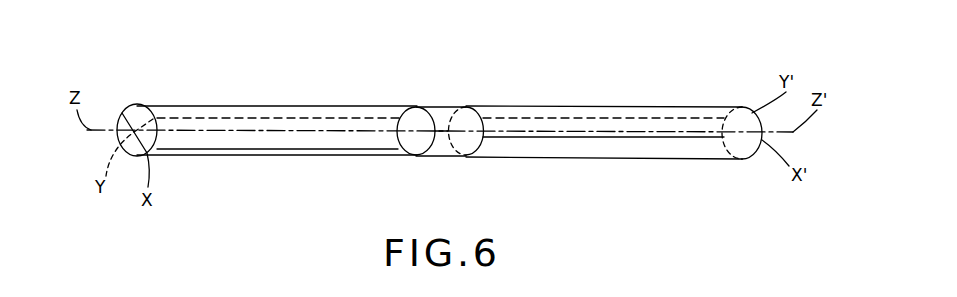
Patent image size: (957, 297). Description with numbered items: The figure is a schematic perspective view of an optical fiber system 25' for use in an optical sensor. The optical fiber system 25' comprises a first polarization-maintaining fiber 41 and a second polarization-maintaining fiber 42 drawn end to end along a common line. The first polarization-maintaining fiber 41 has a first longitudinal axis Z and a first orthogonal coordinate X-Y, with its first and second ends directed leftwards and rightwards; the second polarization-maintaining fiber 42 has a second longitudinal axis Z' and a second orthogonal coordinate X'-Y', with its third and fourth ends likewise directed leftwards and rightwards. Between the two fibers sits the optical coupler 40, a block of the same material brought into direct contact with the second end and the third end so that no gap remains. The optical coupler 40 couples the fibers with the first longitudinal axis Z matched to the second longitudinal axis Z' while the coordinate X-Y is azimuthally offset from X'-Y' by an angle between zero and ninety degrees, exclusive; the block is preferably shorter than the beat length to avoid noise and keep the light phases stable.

The optical fiber system 25' is at (439, 91).
The optical coupler 40 is at (440, 112).
The first polarization-maintaining fiber 41 is at (280, 108).
The second polarization-maintaining fiber 42 is at (607, 107).